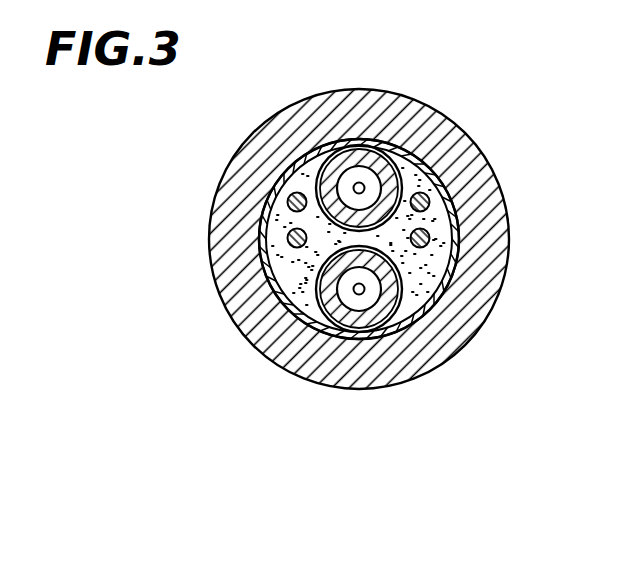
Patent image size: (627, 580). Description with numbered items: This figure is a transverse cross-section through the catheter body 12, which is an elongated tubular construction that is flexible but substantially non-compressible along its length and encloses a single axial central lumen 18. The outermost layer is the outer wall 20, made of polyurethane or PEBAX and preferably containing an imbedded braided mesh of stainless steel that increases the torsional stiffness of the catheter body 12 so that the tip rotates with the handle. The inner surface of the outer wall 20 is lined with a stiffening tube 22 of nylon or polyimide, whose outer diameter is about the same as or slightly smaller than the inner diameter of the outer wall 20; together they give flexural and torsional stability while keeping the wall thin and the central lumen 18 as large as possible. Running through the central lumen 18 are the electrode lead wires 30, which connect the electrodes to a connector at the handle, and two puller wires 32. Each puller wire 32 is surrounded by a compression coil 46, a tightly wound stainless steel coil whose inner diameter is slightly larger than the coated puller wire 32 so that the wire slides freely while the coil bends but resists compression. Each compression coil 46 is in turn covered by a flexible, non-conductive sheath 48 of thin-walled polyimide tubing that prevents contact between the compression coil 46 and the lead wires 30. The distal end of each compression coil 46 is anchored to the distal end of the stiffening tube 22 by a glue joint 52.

The catheter body 12 is at (200, 148).
The central lumen 18 is at (432, 170).
The outer wall 20 is at (410, 118).
The stiffening tube 22 is at (456, 249).
The electrode lead wire 30 is at (296, 238).
The puller wire 32 is at (356, 289).
The compression coil 46 is at (363, 146).
The non-conductive sheath 48 is at (314, 148).
The glue joint 52 is at (428, 270).